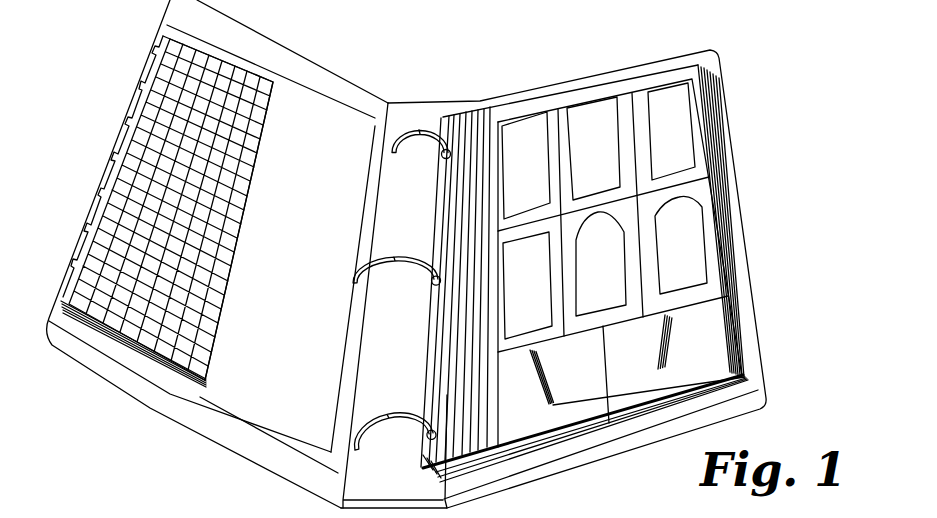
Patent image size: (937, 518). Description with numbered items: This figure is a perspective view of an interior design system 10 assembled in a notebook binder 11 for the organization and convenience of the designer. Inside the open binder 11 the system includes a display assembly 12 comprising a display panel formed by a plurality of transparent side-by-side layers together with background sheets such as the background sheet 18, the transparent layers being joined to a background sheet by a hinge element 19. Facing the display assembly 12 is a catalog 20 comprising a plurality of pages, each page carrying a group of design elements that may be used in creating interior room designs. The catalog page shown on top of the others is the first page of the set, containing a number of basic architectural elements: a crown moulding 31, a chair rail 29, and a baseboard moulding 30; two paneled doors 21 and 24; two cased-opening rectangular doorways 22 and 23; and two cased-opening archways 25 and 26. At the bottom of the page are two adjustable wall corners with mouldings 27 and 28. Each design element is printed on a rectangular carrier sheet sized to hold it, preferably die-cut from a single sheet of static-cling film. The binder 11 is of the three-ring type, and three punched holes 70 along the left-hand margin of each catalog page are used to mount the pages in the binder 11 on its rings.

The interior design system 10 is at (549, 74).
The notebook binder 11 is at (567, 475).
The display assembly 12 is at (240, 55).
The background sheet 18 is at (176, 350).
The hinge element 19 is at (88, 231).
The catalog 20 is at (715, 227).
The paneled door 21 is at (533, 172).
The cased-opening rectangular doorway 22 is at (606, 152).
The cased-opening rectangular doorway 23 is at (682, 138).
The paneled door 24 is at (536, 298).
The cased-opening archway 25 is at (611, 274).
The cased-opening archway 26 is at (691, 248).
The adjustable wall corner with moulding 27 is at (648, 368).
The adjustable wall corner with moulding 28 is at (588, 384).
The chair rail 29 is at (484, 117).
The baseboard moulding 30 is at (472, 118).
The crown moulding 31 is at (460, 118).
The punched holes 70 is at (441, 157).